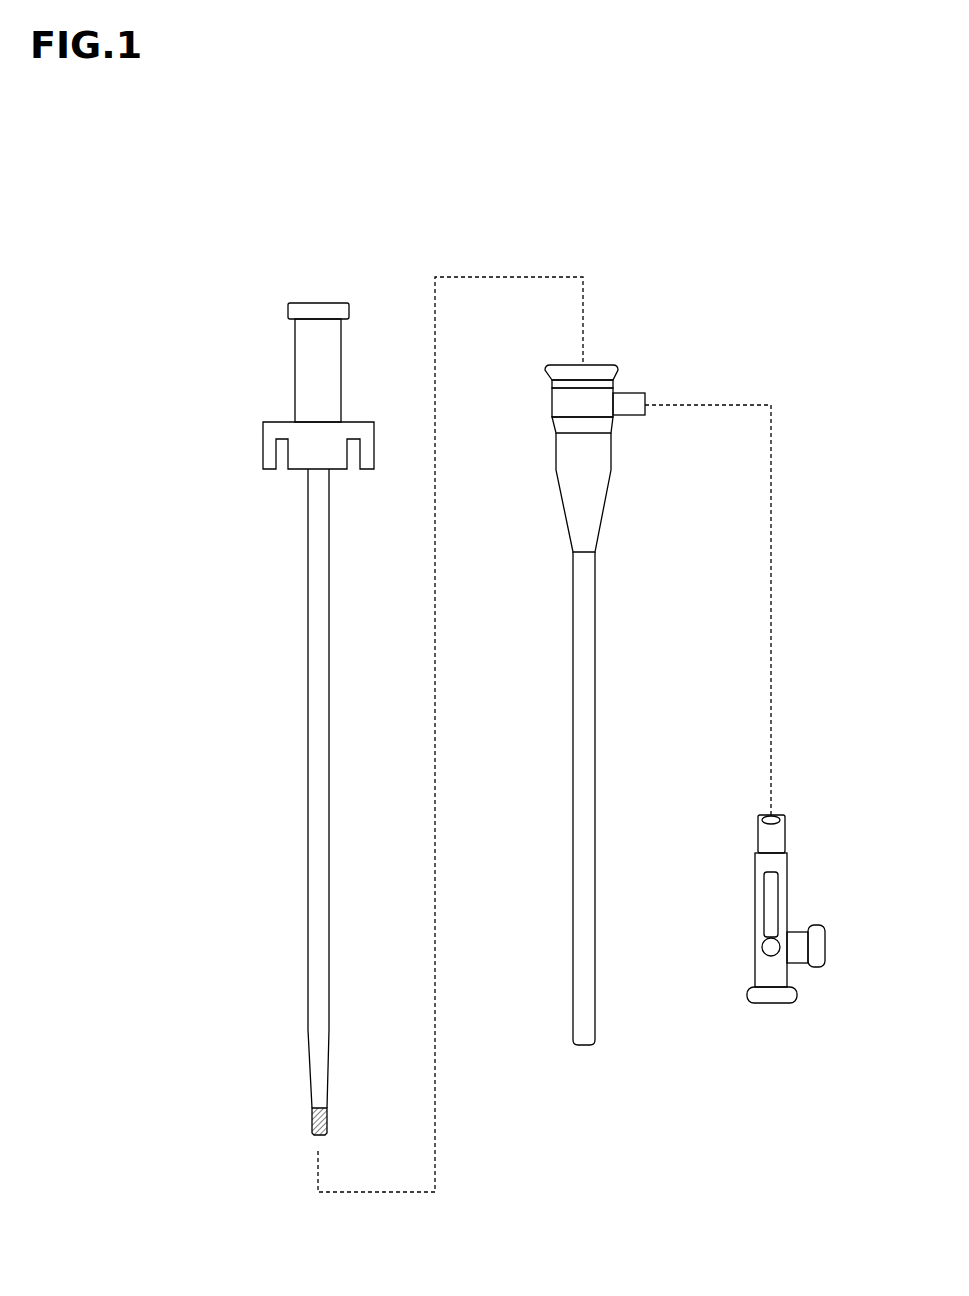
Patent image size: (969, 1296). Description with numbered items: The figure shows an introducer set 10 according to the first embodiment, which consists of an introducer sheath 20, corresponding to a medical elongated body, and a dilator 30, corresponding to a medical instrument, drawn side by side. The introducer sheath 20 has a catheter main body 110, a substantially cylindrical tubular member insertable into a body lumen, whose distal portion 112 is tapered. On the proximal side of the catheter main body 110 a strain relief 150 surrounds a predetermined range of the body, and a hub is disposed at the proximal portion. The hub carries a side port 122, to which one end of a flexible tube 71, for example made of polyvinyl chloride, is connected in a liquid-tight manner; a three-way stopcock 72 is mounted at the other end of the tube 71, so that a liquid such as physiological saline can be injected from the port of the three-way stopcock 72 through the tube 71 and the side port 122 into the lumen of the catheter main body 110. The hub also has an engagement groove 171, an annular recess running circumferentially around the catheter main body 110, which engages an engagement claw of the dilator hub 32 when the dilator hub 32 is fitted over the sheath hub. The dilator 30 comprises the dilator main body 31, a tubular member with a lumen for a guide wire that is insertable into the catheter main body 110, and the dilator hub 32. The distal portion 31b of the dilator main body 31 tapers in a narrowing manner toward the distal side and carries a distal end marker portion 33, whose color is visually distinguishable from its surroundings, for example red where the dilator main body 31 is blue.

The introducer set 10 is at (176, 224).
The introducer sheath 20 is at (630, 365).
The dilator 30 is at (258, 384).
The dilator main body 31 is at (310, 724).
The distal portion 31b is at (312, 1108).
The dilator hub 32 is at (268, 451).
The distal end marker portion 33 is at (327, 1108).
The tube 71 is at (786, 840).
The three-way stopcock 72 is at (788, 975).
The catheter main body 110 is at (596, 846).
The distal portion 112 is at (596, 1036).
The side port 122 is at (632, 410).
The strain relief 150 is at (588, 472).
The engagement groove 171 is at (615, 390).